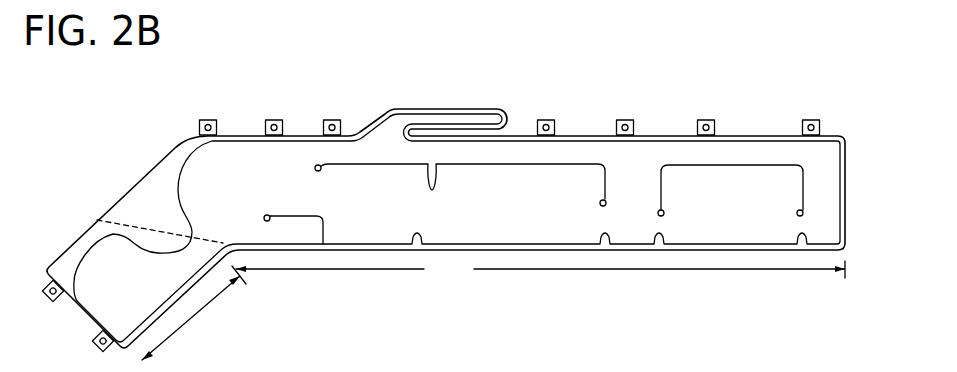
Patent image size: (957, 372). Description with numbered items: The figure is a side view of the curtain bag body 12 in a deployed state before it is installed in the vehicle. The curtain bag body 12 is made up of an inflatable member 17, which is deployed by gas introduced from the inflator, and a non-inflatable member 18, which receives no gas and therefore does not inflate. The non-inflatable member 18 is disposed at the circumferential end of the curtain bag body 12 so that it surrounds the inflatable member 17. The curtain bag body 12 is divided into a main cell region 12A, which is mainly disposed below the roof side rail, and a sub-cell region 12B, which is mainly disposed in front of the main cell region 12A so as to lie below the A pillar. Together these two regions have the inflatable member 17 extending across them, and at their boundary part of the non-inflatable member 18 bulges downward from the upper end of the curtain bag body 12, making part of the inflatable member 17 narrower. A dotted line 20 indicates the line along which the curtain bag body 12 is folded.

The curtain bag body 12 is at (578, 90).
The main cell region 12A is at (540, 272).
The sub-cell region 12B is at (194, 313).
The inflatable member 17 is at (647, 155).
The non-inflatable member 18 is at (150, 187).
The dotted line 20 is at (127, 222).